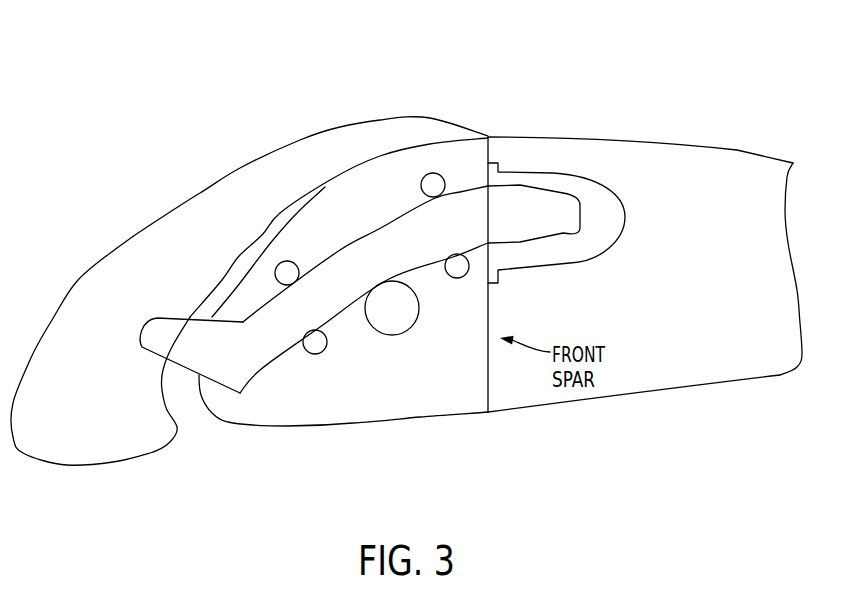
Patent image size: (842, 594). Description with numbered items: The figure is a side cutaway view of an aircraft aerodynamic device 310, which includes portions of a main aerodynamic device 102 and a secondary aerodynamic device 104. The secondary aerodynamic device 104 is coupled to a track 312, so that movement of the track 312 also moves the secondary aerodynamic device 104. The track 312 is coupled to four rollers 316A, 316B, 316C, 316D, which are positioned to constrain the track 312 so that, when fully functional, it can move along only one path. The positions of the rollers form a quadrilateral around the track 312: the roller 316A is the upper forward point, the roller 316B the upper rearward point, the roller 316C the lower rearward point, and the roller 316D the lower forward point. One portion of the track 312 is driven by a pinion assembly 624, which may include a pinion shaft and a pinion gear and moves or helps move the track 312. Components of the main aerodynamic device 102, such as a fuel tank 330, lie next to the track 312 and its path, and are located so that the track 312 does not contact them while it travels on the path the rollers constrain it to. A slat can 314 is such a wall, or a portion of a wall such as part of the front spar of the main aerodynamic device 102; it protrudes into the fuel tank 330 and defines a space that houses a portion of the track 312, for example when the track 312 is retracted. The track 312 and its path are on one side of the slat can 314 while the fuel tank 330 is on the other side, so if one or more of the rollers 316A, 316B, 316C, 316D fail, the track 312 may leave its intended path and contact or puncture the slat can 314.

The aircraft aerodynamic device 310 is at (148, 77).
The secondary aerodynamic device 104 is at (105, 238).
The track 312 is at (228, 408).
The roller 316A is at (283, 250).
The roller 316B is at (408, 190).
The roller 316C is at (455, 288).
The roller 316D is at (310, 366).
The pinion assembly 624 is at (390, 348).
The slat can 314 is at (563, 160).
The main aerodynamic device 102 is at (609, 415).
The fuel tank 330 is at (699, 375).